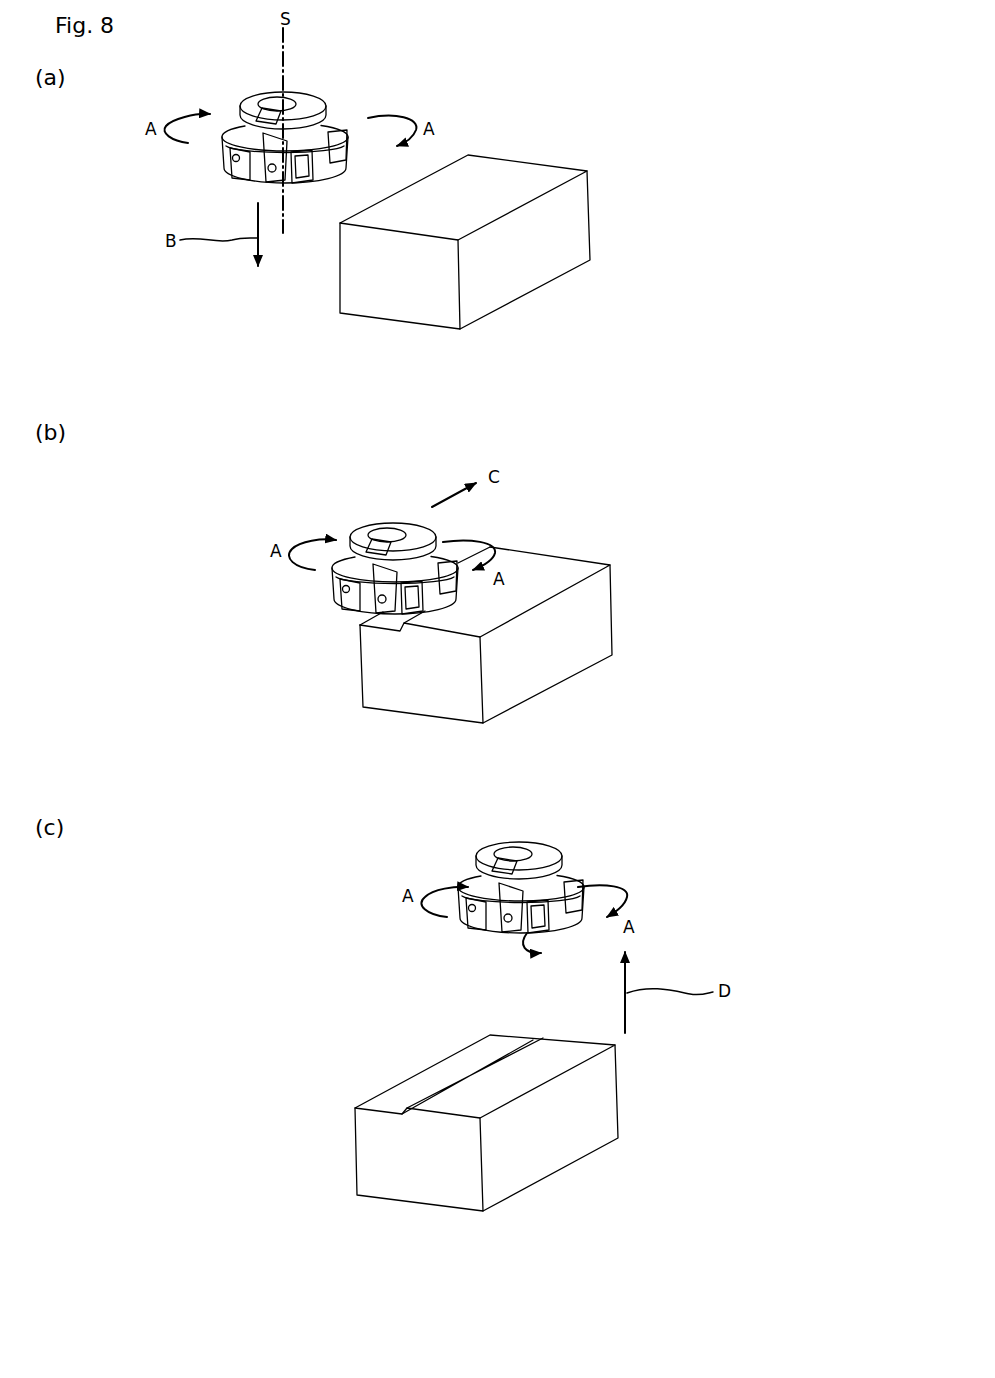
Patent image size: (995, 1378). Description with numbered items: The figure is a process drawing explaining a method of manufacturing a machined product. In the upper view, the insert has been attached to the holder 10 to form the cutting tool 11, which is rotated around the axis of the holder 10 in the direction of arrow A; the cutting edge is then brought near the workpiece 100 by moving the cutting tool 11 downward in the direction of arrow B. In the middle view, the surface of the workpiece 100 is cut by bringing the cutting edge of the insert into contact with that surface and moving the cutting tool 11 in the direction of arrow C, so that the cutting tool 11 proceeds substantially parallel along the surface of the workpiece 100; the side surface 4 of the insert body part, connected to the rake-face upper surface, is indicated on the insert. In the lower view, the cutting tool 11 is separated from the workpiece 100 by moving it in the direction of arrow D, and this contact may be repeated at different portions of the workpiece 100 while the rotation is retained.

The holder 10 is at (335, 93).
The cutting tool 11 is at (255, 103).
The side surface 4 is at (326, 613).
The workpiece 100 is at (598, 203).